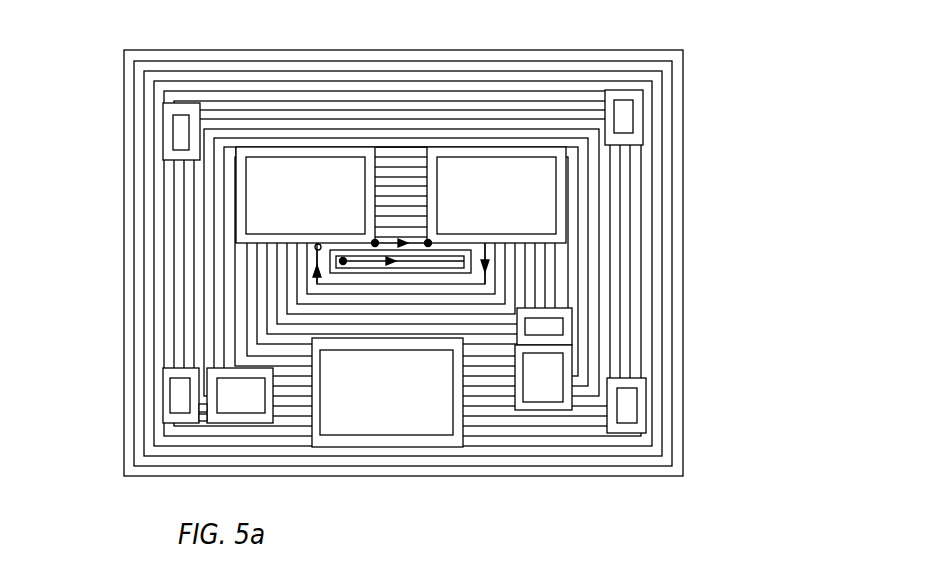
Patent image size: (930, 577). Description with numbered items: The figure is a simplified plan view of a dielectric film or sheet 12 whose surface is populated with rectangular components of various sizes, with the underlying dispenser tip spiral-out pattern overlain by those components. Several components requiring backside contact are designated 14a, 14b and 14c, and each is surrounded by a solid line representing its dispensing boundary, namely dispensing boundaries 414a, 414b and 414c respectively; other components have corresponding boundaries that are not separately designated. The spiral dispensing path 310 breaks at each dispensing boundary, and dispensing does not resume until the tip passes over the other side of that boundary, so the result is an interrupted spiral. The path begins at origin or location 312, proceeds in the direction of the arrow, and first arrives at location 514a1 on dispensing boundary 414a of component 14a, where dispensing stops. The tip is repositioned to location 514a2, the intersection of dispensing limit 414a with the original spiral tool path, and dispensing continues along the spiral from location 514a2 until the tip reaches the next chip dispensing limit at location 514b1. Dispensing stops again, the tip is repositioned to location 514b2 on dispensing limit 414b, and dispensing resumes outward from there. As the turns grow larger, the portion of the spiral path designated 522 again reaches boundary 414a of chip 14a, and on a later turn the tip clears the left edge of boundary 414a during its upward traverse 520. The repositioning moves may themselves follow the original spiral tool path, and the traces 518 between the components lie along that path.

The dielectric film or sheet 12 is at (688, 74).
The spiral dispensing path 310 is at (688, 103).
The conductor traces between modules 518 is at (404, 150).
The upward traverse 520 is at (237, 190).
The portion of the spiral path 522 is at (237, 262).
The component 14a is at (305, 195).
The component 14b is at (496, 195).
The component 14c is at (558, 385).
The dispensing boundary 414a is at (366, 162).
The dispensing boundary 414b is at (520, 184).
The dispensing boundary 414c is at (541, 412).
The location 514a1 is at (316, 245).
The location 514a2 is at (375, 242).
The location 514b1 is at (428, 242).
The location 514b2 is at (485, 252).
The origin or location 312 is at (343, 258).